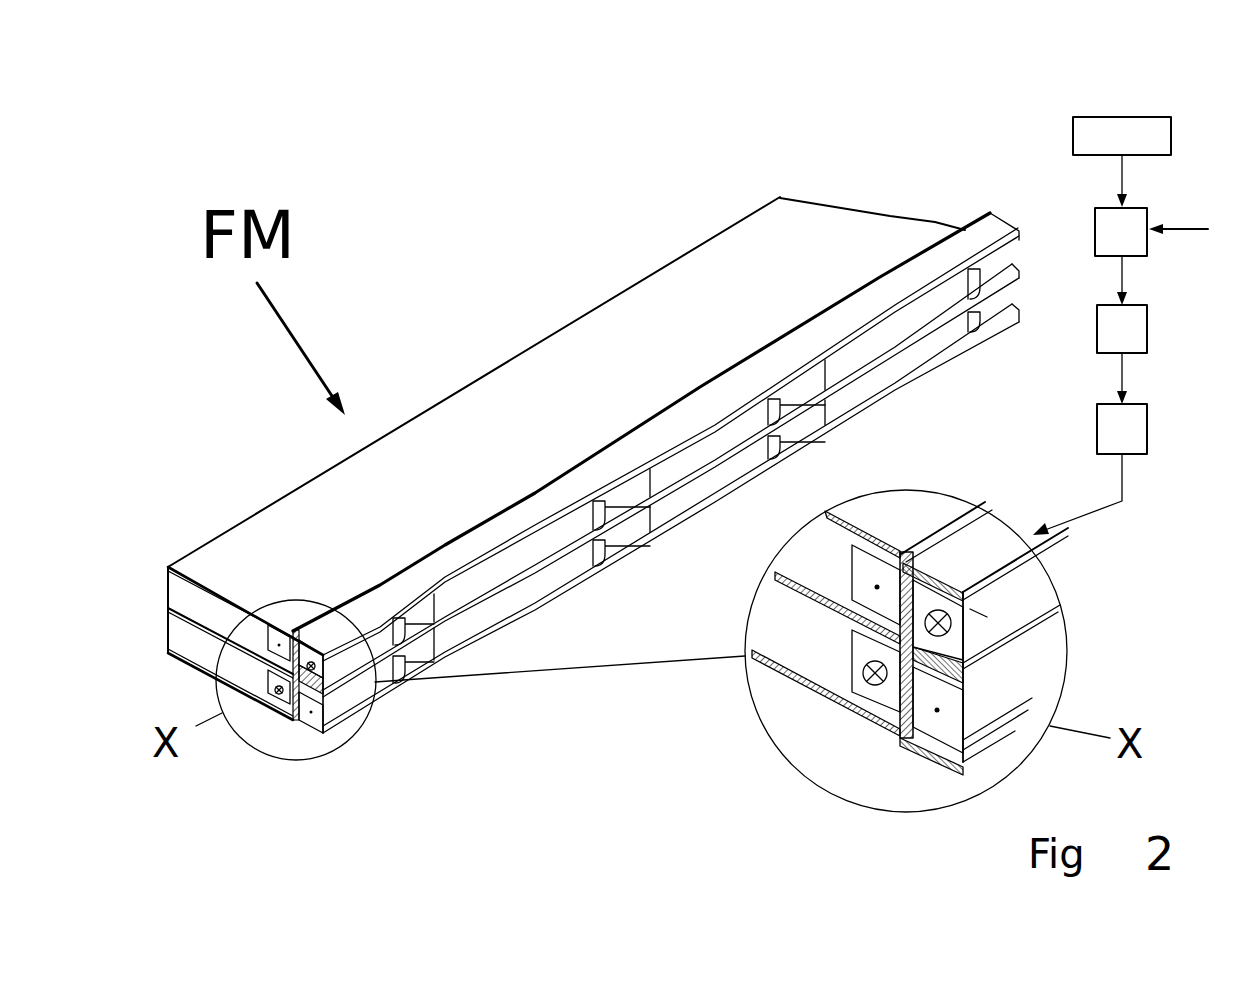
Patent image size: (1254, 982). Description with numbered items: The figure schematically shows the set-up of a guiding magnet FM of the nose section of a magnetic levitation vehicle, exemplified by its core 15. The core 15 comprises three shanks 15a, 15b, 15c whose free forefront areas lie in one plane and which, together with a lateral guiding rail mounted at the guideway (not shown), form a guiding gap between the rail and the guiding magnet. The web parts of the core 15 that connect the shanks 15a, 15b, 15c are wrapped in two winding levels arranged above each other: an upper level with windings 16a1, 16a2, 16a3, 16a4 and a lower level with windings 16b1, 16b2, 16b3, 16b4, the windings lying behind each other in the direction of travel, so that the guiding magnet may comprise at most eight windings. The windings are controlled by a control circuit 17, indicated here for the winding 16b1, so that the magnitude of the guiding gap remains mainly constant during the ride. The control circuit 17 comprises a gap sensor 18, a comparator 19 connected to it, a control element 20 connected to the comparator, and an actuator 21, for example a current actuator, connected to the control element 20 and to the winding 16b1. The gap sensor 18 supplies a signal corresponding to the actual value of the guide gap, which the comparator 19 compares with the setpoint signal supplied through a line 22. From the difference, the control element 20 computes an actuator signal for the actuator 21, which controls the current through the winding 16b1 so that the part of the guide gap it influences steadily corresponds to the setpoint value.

The core 15 is at (918, 754).
The shank 15a is at (945, 590).
The shank 15b is at (920, 657).
The shank 15c is at (955, 752).
The winding 16a1 is at (382, 640).
The winding 16a2 is at (537, 543).
The winding 16a3 is at (707, 440).
The winding 16a4 is at (910, 325).
The winding 16b1 is at (382, 683).
The winding 16b2 is at (543, 580).
The winding 16b3 is at (700, 490).
The winding 16b4 is at (915, 357).
The control circuit 17 is at (1022, 157).
The gap sensor 18 is at (1109, 127).
The comparator 19 is at (1107, 239).
The control element 20 is at (1137, 330).
The actuator 21 is at (1137, 425).
The line 22 is at (1192, 237).